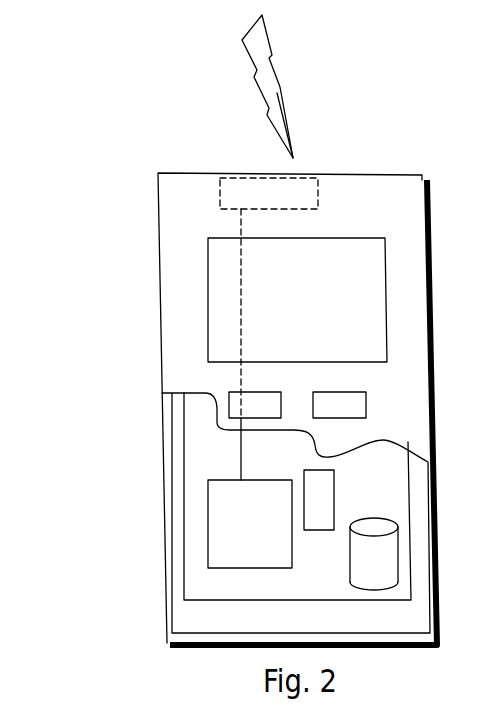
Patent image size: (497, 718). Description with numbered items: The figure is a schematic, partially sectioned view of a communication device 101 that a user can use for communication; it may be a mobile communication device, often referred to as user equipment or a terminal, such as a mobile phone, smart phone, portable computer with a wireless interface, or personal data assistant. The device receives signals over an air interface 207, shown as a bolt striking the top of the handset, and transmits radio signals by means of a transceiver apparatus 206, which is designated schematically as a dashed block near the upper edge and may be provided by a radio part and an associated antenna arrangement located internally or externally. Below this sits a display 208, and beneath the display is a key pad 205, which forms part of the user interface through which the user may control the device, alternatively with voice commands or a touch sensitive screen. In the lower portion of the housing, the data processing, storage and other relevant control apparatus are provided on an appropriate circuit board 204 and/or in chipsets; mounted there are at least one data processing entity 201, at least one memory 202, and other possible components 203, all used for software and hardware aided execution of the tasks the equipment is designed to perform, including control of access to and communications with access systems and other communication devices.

The communication device 101 is at (162, 213).
The data processing entity 201 is at (215, 508).
The memory 202 is at (370, 563).
The other possible components 203 is at (318, 485).
The circuit board 204 is at (210, 585).
The key pad 205 is at (230, 405).
The transceiver apparatus 206 is at (308, 190).
The air interface 207 is at (296, 108).
The display 208 is at (223, 286).